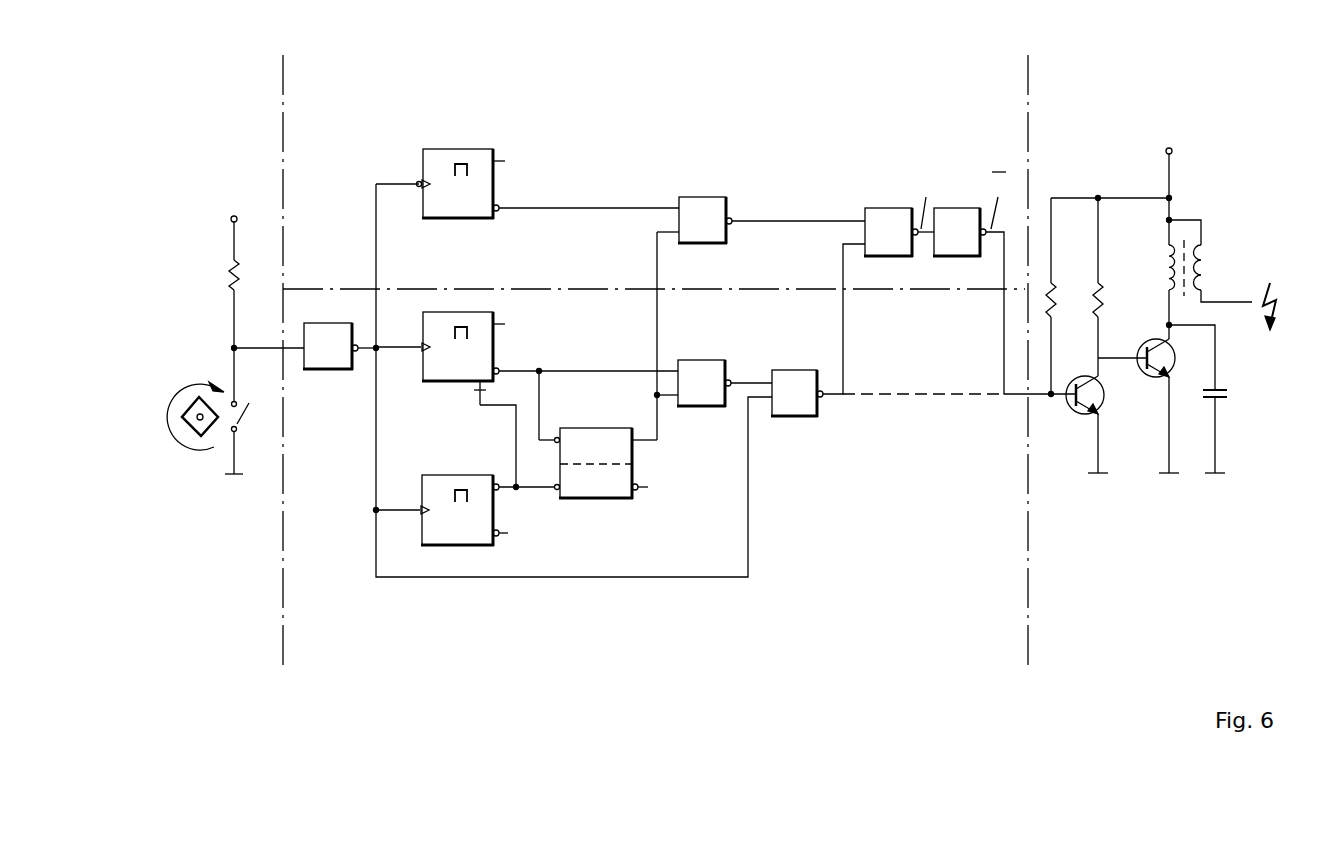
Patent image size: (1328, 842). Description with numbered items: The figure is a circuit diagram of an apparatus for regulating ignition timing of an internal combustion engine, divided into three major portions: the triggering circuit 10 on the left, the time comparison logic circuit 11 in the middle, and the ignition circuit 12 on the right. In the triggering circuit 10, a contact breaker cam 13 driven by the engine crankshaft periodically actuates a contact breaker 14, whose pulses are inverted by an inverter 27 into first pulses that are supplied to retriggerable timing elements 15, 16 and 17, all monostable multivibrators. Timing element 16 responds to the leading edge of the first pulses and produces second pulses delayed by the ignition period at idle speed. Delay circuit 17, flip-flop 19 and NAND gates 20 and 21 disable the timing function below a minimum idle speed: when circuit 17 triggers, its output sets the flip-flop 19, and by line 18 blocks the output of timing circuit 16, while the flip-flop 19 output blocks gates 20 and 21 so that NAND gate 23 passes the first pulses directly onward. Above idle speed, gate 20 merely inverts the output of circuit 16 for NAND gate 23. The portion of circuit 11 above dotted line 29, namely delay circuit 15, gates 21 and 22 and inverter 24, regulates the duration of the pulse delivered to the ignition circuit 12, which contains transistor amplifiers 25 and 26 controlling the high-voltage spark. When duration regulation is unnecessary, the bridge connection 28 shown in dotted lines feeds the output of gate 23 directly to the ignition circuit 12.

The triggering circuit 10 is at (230, 132).
The time comparison logic circuit 11 is at (650, 135).
The ignition circuit 12 is at (1115, 130).
The contact breaker cam 13 is at (190, 429).
The contact breaker 14 is at (244, 418).
The retriggerable timing element 15 is at (453, 152).
The retriggerable timing element 16 is at (452, 314).
The retriggerable timing element 17 is at (440, 478).
The line 18 is at (489, 406).
The flip-flop 19 is at (606, 431).
The NAND gate 20 is at (697, 363).
The NAND gate 21 is at (697, 200).
The NAND gate 22 is at (884, 253).
The NAND gate 23 is at (797, 372).
The inverter 24 is at (953, 253).
The transistor amplifier 25 is at (1072, 413).
The transistor amplifier 26 is at (1145, 373).
The inverter 27 is at (320, 370).
The bridge connection 28 is at (920, 397).
The dotted line 29 is at (752, 289).